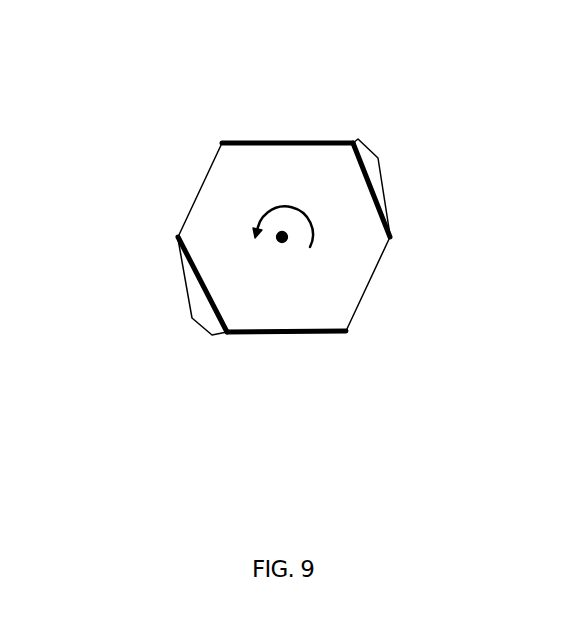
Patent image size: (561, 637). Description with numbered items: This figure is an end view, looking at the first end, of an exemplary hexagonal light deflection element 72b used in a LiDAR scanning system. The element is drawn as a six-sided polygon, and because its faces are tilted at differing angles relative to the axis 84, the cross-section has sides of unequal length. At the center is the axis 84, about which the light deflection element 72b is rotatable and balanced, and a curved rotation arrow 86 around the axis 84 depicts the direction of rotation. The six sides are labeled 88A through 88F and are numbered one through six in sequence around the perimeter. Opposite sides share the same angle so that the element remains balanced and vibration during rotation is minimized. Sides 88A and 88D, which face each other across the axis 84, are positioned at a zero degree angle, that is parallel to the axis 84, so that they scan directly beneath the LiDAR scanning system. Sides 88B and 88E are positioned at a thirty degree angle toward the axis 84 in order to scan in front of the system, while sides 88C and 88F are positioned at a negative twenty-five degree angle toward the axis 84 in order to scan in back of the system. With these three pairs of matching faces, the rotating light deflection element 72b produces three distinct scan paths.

The hexagonal light deflection element 72b is at (410, 72).
The side 88A is at (263, 142).
The side 88B is at (190, 192).
The side 88C is at (203, 313).
The side 88D is at (295, 333).
The side 88E is at (365, 292).
The side 88F is at (380, 183).
The axis 84 is at (282, 242).
The rotation arrow 86 is at (293, 208).